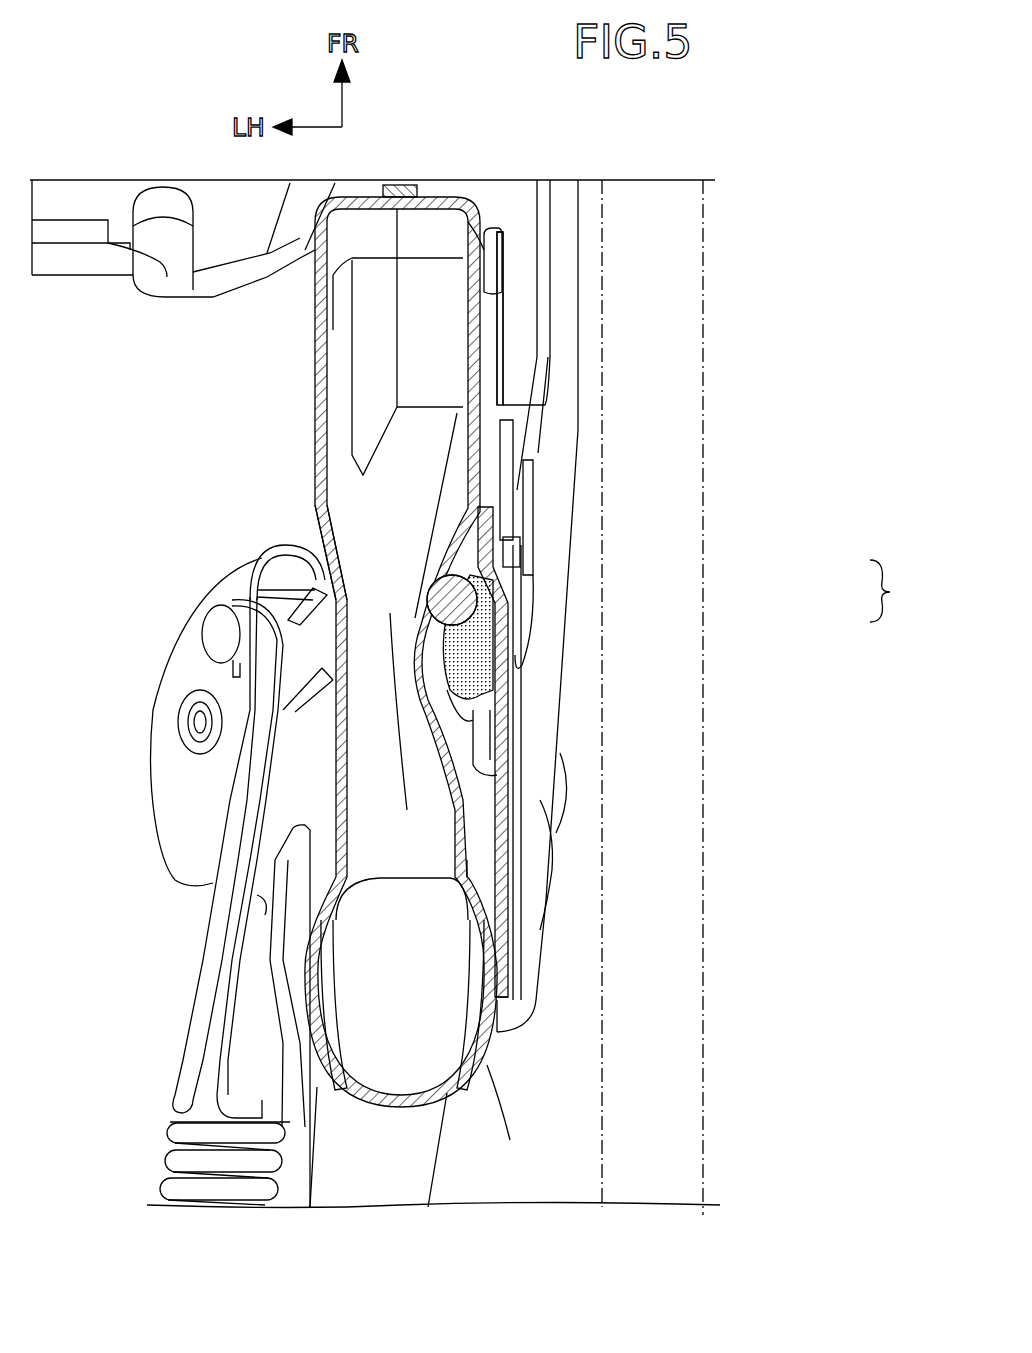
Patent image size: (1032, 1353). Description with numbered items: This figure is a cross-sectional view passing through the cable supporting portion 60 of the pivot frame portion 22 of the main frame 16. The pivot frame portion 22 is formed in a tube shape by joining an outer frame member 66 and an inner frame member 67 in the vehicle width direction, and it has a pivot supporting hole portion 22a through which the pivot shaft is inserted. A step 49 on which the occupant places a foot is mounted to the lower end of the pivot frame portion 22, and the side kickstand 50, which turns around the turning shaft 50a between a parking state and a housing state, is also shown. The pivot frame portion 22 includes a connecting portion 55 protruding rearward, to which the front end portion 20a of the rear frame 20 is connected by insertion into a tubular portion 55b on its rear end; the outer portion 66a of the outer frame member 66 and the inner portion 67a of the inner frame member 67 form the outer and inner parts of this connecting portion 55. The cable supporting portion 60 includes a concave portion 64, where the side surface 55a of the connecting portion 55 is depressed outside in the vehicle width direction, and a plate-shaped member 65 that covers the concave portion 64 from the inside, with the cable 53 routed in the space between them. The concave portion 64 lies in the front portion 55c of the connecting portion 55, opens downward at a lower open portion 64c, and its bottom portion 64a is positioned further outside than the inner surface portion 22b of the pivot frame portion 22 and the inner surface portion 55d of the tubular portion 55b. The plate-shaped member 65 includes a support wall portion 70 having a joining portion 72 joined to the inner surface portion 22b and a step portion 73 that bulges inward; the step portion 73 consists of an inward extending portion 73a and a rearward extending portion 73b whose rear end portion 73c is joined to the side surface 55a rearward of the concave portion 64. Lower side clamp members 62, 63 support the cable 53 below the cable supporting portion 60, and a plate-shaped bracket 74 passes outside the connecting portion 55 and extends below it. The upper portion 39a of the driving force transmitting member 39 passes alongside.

The main frame 16 is at (314, 341).
The rear frame 20 is at (395, 1105).
The front end portion of the rear frame 20a is at (470, 1100).
The pivot frame portion 22 is at (315, 382).
The pivot supporting hole portion 22a is at (519, 290).
The inner surface portion of the pivot frame portion 22b is at (478, 410).
The driving force transmitting member 39 is at (705, 902).
The upper portion of the driving force transmitting member 39a is at (705, 925).
The step 49 is at (203, 180).
The side kickstand 50 is at (360, 1195).
The turning shaft 50a is at (207, 720).
The cable 53 is at (440, 590).
The connecting portion 55 is at (300, 648).
The side surface of the connecting portion 55a is at (467, 803).
The tubular portion 55b is at (487, 1065).
The front portion of the connecting portion 55c is at (327, 653).
The inner surface portion of the tubular portion 55d is at (497, 960).
The cable supporting portion 60 is at (523, 752).
The lower side clamp member 62 is at (453, 722).
The lower side clamp member 63 is at (533, 498).
The concave portion 64 is at (430, 693).
The bottom portion of the concave portion 64a is at (430, 678).
The lower open portion 64c is at (467, 740).
The plate-shaped member 65 is at (522, 836).
The outer frame member 66 is at (315, 418).
The outer portion 66a is at (335, 841).
The inner frame member 67 is at (480, 365).
The inner portion 67a is at (510, 850).
The support wall portion 70 is at (467, 857).
The joining portion 72 is at (505, 525).
The step portion 73 is at (898, 591).
The inward extending portion 73a is at (500, 582).
The rearward extending portion 73b is at (520, 668).
The rear end portion of the rearward extending portion 73c is at (512, 968).
The bracket 74 is at (267, 980).